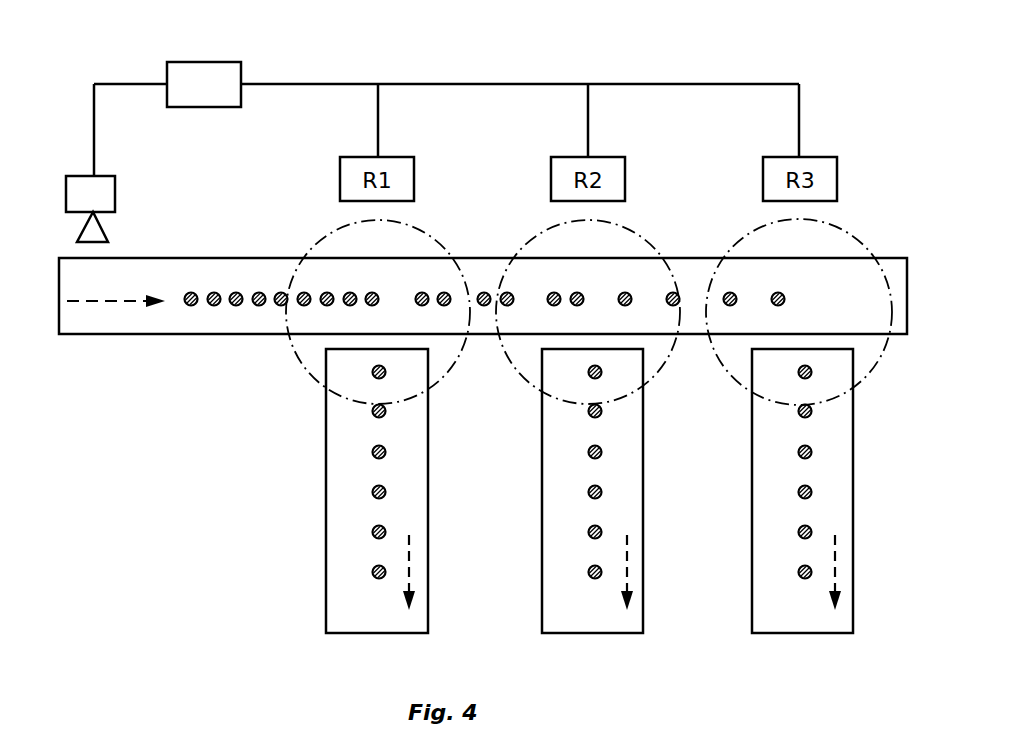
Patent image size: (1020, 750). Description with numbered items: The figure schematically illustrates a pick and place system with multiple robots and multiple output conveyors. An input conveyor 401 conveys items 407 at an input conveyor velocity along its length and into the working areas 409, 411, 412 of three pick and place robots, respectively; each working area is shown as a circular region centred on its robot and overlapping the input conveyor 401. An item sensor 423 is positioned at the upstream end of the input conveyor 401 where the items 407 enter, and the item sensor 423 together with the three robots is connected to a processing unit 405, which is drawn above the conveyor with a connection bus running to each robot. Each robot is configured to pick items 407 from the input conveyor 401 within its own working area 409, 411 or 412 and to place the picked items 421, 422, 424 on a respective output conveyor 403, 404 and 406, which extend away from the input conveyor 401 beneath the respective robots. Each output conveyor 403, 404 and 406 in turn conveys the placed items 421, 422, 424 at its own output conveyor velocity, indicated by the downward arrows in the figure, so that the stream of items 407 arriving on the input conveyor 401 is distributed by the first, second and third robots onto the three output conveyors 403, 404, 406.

The input conveyor 401 is at (59, 285).
The output conveyor 403 is at (326, 589).
The output conveyor 404 is at (542, 589).
The processing unit 405 is at (175, 62).
The output conveyor 406 is at (752, 589).
The item 407 is at (189, 307).
The working area 409 is at (412, 227).
The working area 411 is at (622, 227).
The working area 412 is at (834, 227).
The picked item 421 is at (372, 492).
The picked item 422 is at (588, 492).
The item sensor 423 is at (78, 176).
The picked item 424 is at (798, 492).